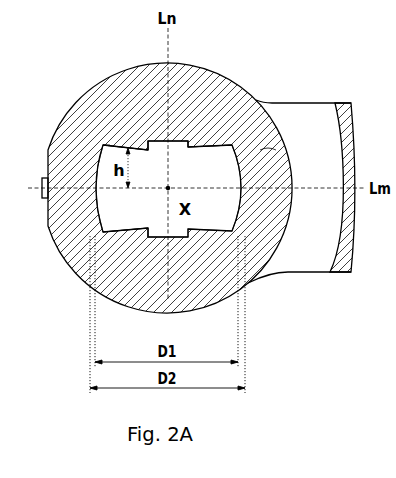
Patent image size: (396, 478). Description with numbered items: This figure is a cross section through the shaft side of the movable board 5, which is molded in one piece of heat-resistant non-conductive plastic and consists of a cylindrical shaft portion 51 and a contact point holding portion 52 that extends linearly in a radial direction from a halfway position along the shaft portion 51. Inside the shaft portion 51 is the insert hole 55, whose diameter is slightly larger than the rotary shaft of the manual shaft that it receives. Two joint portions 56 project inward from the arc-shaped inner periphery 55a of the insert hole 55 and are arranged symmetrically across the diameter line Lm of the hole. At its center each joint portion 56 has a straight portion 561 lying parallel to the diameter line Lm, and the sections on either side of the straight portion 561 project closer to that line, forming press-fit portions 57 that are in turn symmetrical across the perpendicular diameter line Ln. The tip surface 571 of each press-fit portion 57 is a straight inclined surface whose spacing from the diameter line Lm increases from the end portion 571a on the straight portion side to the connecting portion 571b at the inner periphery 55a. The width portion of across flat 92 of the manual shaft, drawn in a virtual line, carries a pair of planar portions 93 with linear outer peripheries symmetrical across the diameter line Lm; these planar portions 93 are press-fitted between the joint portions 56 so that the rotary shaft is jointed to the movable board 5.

The movable board 5 is at (301, 156).
The shaft portion 51 is at (268, 101).
The contact point holding portion 52 is at (334, 164).
The insert hole 55 is at (204, 218).
The inner periphery 55a is at (243, 173).
The joint portions 56 is at (172, 140).
The straight portion 561 is at (138, 141).
The press-fit portions 57 is at (118, 139).
The tip surface 571 is at (105, 143).
The end portion 571a is at (167, 186).
The connecting portion 571b is at (102, 142).
The width portion of across flat 92 is at (258, 150).
The planar portions 93 is at (190, 146).